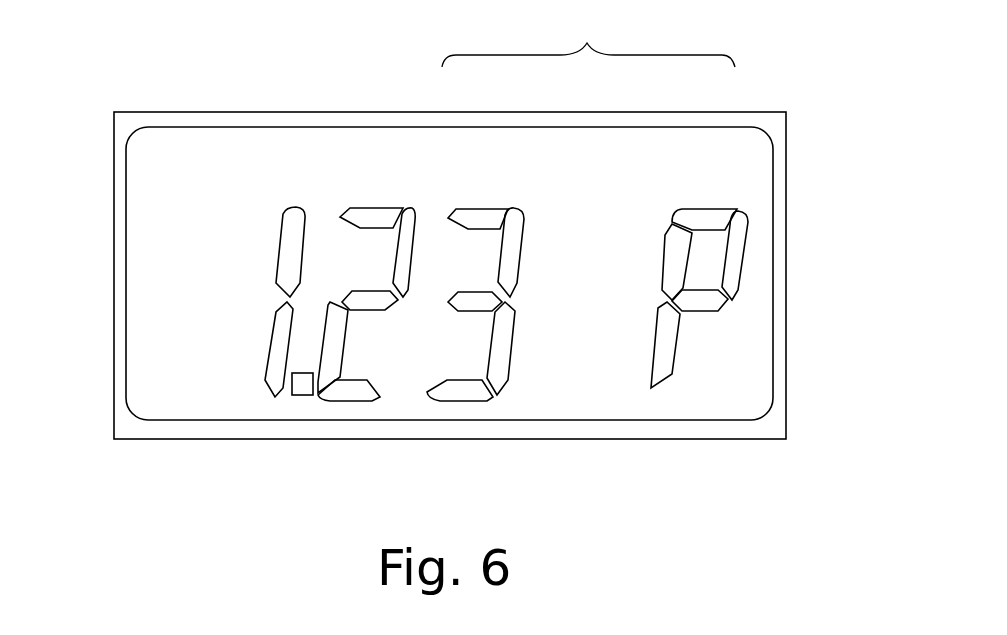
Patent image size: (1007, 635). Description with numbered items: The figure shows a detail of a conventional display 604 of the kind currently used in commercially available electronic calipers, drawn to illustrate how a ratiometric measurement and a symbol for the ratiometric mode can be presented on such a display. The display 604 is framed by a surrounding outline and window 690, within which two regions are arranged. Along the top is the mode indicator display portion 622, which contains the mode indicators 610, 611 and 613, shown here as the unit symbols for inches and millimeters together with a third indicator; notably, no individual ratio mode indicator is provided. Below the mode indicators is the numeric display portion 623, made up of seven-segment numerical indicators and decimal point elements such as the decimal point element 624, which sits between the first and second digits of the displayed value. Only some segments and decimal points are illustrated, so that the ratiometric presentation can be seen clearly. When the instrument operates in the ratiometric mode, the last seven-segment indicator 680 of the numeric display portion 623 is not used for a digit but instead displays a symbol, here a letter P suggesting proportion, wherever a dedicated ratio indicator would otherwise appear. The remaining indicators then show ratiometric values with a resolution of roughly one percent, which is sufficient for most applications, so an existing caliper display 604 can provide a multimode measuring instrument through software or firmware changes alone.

The conventional display 604 is at (821, 175).
The display window 690 is at (788, 353).
The numeric display portion 623 is at (212, 302).
The decimal point element 624 is at (300, 396).
The mode indicator display portion 622 is at (708, 54).
The mode indicator 610 is at (482, 147).
The mode indicator 611 is at (583, 147).
The mode indicator 613 is at (692, 197).
The last seven-segment indicator 680 is at (662, 381).